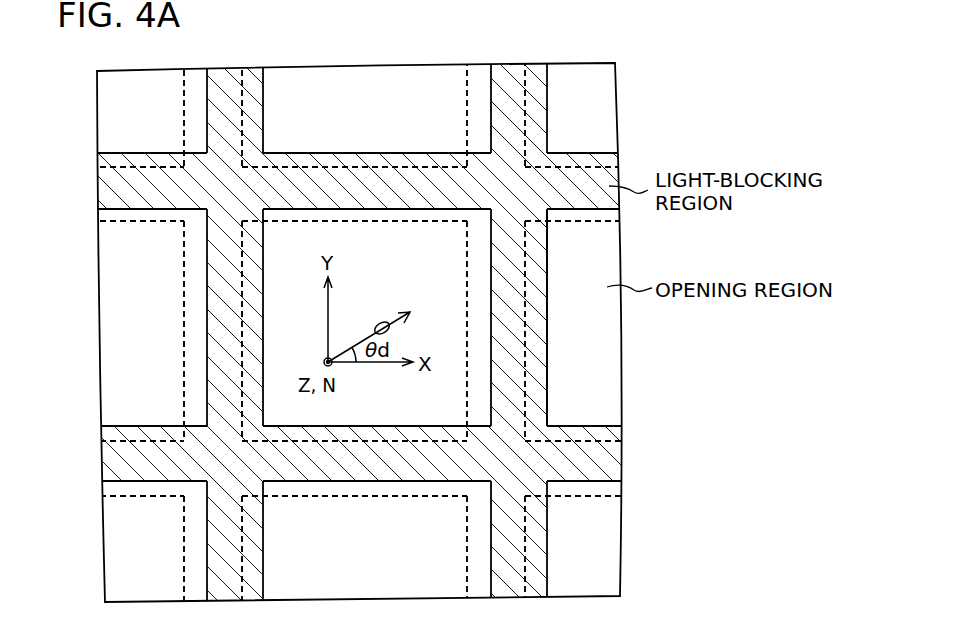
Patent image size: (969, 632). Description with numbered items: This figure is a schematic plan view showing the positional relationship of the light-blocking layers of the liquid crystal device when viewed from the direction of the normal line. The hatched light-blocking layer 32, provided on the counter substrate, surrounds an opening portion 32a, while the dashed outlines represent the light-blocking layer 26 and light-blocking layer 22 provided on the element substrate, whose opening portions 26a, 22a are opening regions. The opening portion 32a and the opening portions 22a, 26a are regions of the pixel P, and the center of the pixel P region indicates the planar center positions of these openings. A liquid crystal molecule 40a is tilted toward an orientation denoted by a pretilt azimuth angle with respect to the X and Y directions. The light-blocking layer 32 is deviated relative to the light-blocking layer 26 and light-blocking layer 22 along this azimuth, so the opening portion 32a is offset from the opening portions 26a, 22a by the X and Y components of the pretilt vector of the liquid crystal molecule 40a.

The light-blocking layer 32 is at (533, 70).
The light-blocking layer 26 is at (478, 70).
The light-blocking layer 22 is at (478, 70).
The opening portion 32a is at (607, 428).
The opening portion 26a is at (610, 496).
The opening portion 22a is at (662, 501).
The liquid crystal molecule 40a is at (378, 322).
The pixel P is at (582, 345).